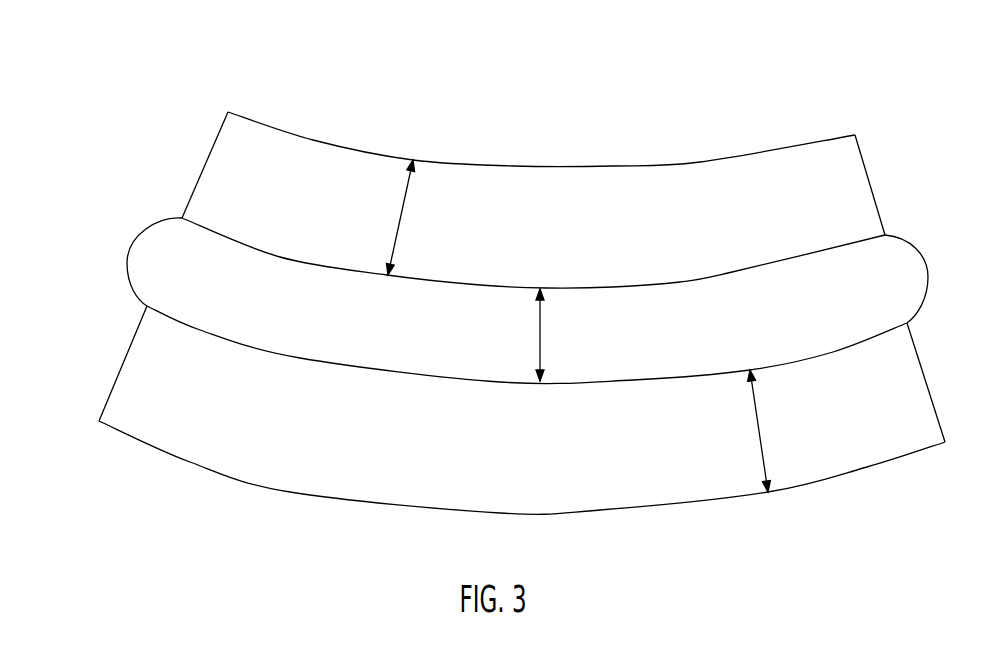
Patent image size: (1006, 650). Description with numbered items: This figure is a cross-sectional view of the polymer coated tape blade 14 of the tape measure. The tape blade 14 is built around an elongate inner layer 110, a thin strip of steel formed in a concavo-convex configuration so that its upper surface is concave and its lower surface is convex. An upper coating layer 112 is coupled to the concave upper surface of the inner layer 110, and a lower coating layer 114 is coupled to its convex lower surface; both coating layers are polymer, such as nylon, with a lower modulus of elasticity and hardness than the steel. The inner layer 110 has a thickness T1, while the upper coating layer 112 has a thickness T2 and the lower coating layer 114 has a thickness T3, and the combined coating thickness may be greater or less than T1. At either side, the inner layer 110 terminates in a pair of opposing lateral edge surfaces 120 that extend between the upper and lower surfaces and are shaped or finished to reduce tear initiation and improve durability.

The tape blade 14 is at (882, 95).
The inner layer 110 is at (287, 303).
The upper coating layer 112 is at (237, 165).
The lower coating layer 114 is at (130, 372).
The lateral edge surfaces 120 is at (135, 233).
The thickness of inner layer T1 is at (542, 322).
The thickness of upper coating layer T2 is at (405, 207).
The thickness of lower coating layer T3 is at (760, 441).